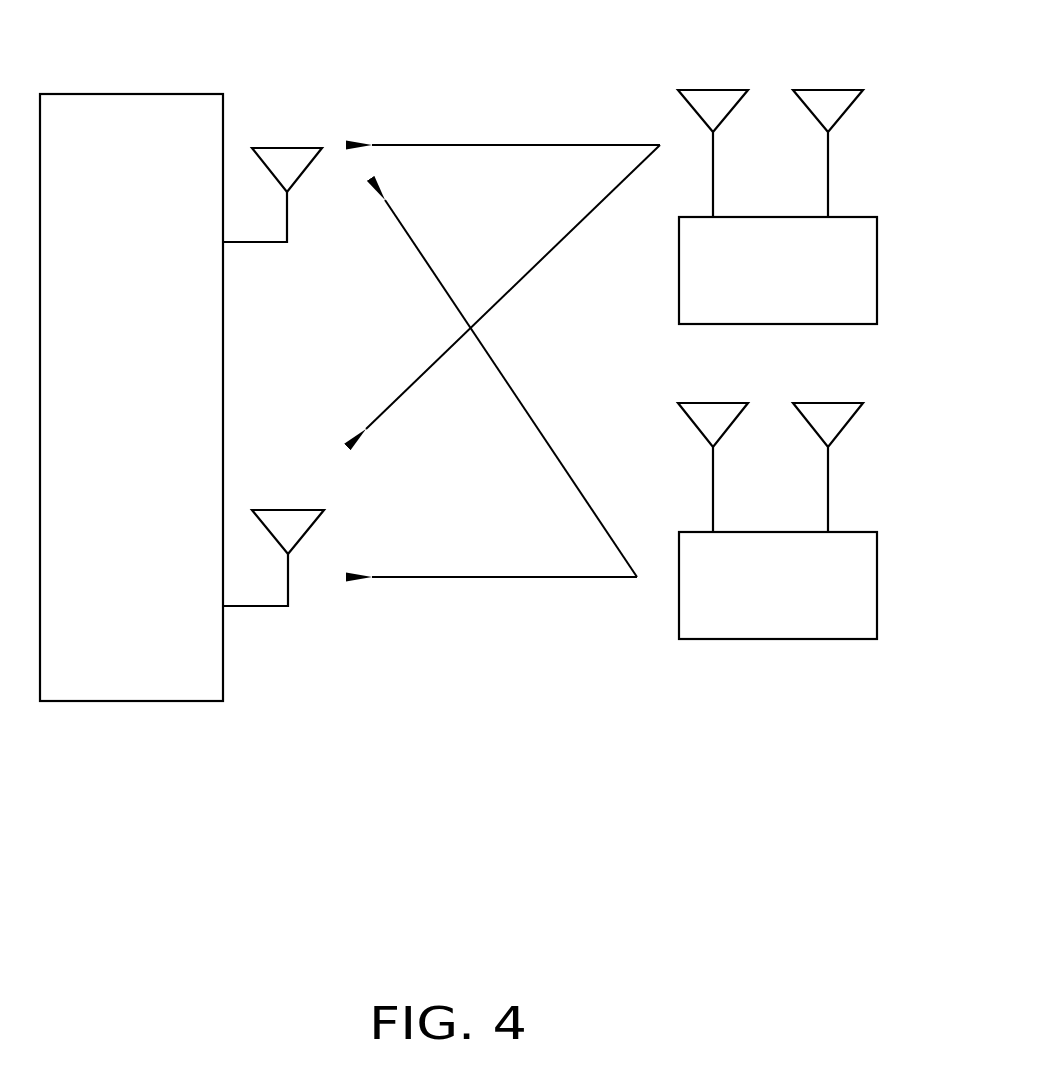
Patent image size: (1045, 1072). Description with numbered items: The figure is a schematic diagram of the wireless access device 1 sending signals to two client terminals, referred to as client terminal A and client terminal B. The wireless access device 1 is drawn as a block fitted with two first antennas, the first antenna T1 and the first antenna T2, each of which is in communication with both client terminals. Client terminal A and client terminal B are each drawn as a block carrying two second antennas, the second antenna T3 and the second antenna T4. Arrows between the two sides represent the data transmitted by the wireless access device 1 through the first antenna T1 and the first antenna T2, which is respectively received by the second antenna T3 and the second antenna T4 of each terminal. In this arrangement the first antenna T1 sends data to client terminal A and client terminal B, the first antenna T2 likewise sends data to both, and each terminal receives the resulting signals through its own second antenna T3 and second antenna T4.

The wireless access device 1 is at (137, 94).
The first antenna T1 is at (278, 157).
The first antenna T2 is at (287, 514).
The second antenna T3 is at (718, 102).
The second antenna T4 is at (833, 102).
The client terminal A is at (851, 217).
The client terminal B is at (851, 532).